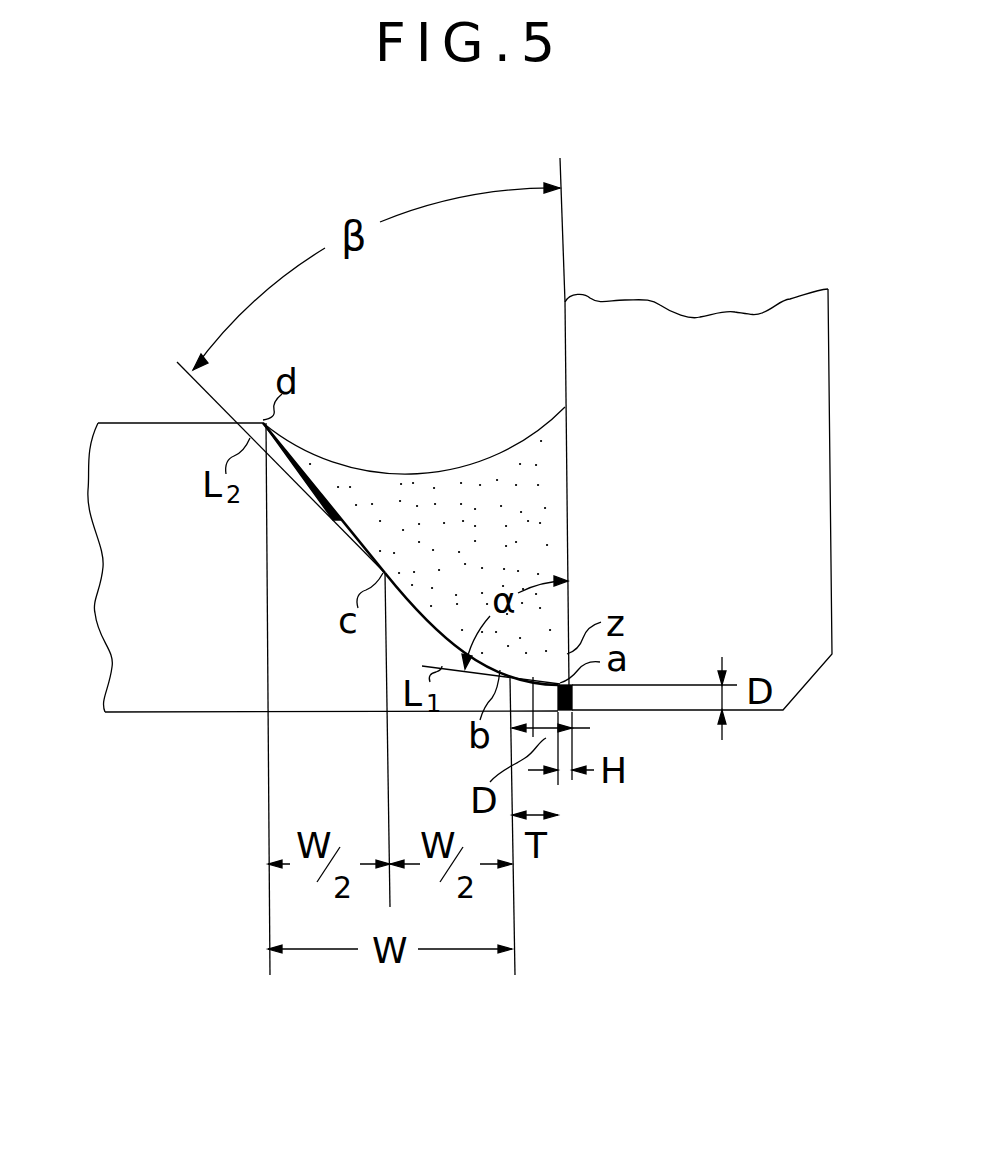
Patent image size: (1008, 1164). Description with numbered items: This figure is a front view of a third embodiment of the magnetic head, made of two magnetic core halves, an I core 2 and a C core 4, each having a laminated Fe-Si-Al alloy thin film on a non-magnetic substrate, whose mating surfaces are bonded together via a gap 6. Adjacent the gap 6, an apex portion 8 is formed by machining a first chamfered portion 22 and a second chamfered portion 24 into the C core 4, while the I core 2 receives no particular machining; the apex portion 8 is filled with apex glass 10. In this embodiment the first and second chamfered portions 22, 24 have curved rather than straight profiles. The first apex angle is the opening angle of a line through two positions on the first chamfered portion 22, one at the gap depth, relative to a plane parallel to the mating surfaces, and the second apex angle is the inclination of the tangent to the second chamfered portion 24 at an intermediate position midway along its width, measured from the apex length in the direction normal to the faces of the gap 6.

The I core 2 is at (831, 470).
The C core 4 is at (102, 568).
The gap 6 is at (572, 697).
The apex portion 8 is at (463, 444).
The apex glass 10 is at (553, 476).
The first chamfered portion 22 is at (527, 672).
The second chamfered portion 24 is at (462, 622).